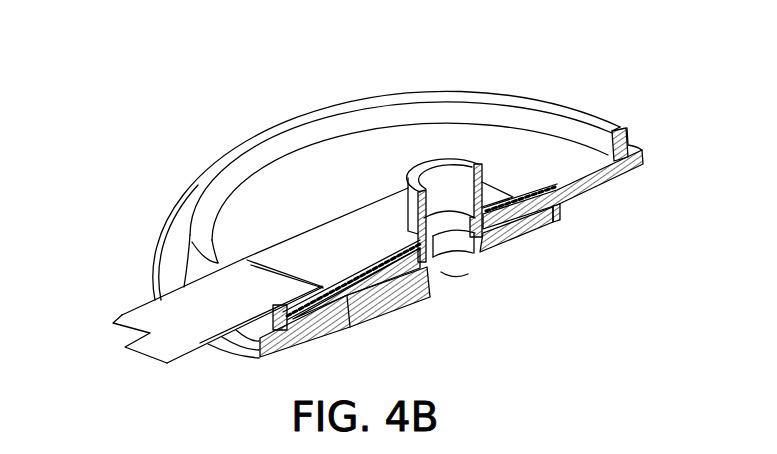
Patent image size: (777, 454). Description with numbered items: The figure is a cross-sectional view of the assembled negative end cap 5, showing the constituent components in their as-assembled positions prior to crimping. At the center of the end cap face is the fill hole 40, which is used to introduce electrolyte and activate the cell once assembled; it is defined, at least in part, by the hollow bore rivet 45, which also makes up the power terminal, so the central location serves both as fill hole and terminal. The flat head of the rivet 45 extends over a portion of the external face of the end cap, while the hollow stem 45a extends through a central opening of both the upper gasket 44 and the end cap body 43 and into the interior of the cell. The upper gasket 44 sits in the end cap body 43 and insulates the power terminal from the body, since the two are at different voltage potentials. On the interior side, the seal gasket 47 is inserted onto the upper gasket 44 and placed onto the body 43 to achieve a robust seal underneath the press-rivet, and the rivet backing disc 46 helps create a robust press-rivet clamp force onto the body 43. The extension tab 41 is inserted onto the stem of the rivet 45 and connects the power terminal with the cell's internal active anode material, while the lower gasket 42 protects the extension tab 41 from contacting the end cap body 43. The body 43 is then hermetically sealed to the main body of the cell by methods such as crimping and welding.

The negative end cap 5 is at (539, 58).
The fill hole 40 is at (434, 270).
The extension tab 41 is at (122, 316).
The lower gasket 42 is at (622, 129).
The end cap body 43 is at (636, 171).
The upper gasket 44 is at (558, 214).
The hollow bore rivet 45 is at (521, 241).
The stem 45a is at (413, 173).
The rivet backing disc 46 is at (378, 268).
The seal gasket 47 is at (521, 195).